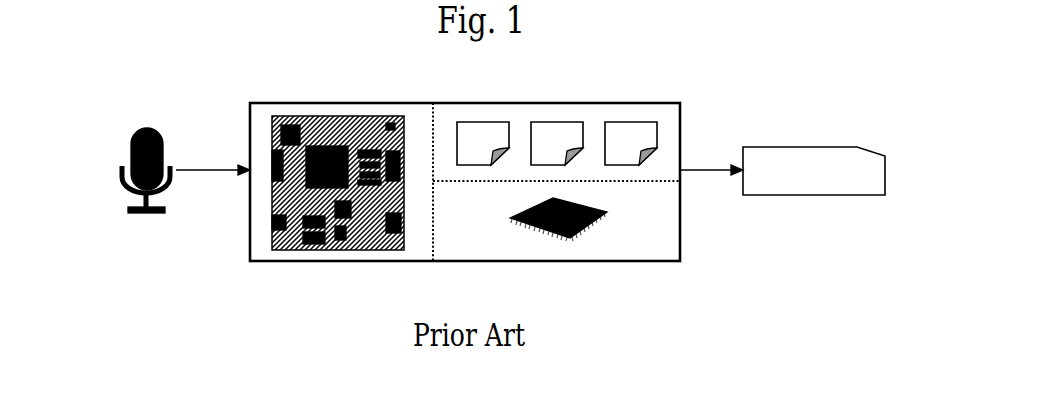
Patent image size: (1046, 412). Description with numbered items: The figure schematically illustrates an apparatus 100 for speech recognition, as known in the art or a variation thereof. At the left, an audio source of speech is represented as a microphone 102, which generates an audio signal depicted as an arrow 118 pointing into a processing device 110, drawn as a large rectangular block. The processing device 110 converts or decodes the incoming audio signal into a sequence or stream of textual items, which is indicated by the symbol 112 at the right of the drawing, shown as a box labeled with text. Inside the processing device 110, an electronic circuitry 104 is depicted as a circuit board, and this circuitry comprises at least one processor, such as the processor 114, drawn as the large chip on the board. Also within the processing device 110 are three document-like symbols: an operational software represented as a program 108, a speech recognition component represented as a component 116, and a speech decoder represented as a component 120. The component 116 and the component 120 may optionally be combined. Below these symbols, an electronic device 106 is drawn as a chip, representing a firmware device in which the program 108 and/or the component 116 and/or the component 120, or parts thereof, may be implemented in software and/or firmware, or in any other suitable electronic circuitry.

The apparatus 100 is at (766, 100).
The microphone 102 is at (132, 147).
The electronic circuitry 104 is at (329, 248).
The electronic device 106 is at (565, 248).
The program 108 is at (487, 122).
The processing device 110 is at (385, 103).
The symbol 112 is at (822, 196).
The processor 114 is at (328, 147).
The component 116 is at (562, 122).
The arrow 118 is at (223, 173).
The component 120 is at (636, 122).